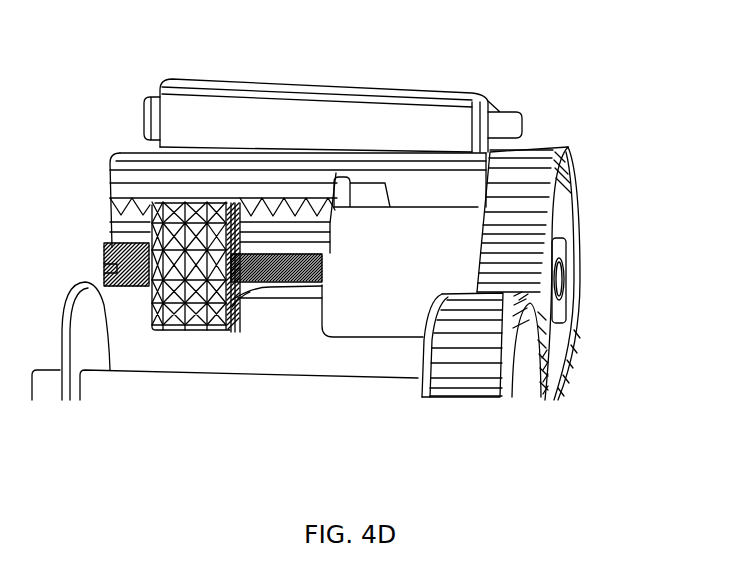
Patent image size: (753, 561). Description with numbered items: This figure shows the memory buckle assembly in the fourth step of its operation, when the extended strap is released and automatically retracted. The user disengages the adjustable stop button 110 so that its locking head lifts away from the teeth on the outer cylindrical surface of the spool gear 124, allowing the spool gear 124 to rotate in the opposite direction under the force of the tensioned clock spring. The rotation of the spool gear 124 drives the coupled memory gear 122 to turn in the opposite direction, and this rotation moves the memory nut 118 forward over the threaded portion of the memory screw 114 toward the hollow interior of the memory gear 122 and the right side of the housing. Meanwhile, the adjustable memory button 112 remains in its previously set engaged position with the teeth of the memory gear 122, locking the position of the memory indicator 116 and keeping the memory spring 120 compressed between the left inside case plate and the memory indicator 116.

The adjustable stop button 110 is at (180, 79).
The adjustable memory button 112 is at (135, 150).
The memory screw 114 is at (217, 333).
The memory indicator 116 is at (163, 338).
The memory nut 118 is at (568, 253).
The memory spring 120 is at (110, 247).
The memory gear 122 is at (453, 388).
The spool gear 124 is at (573, 298).